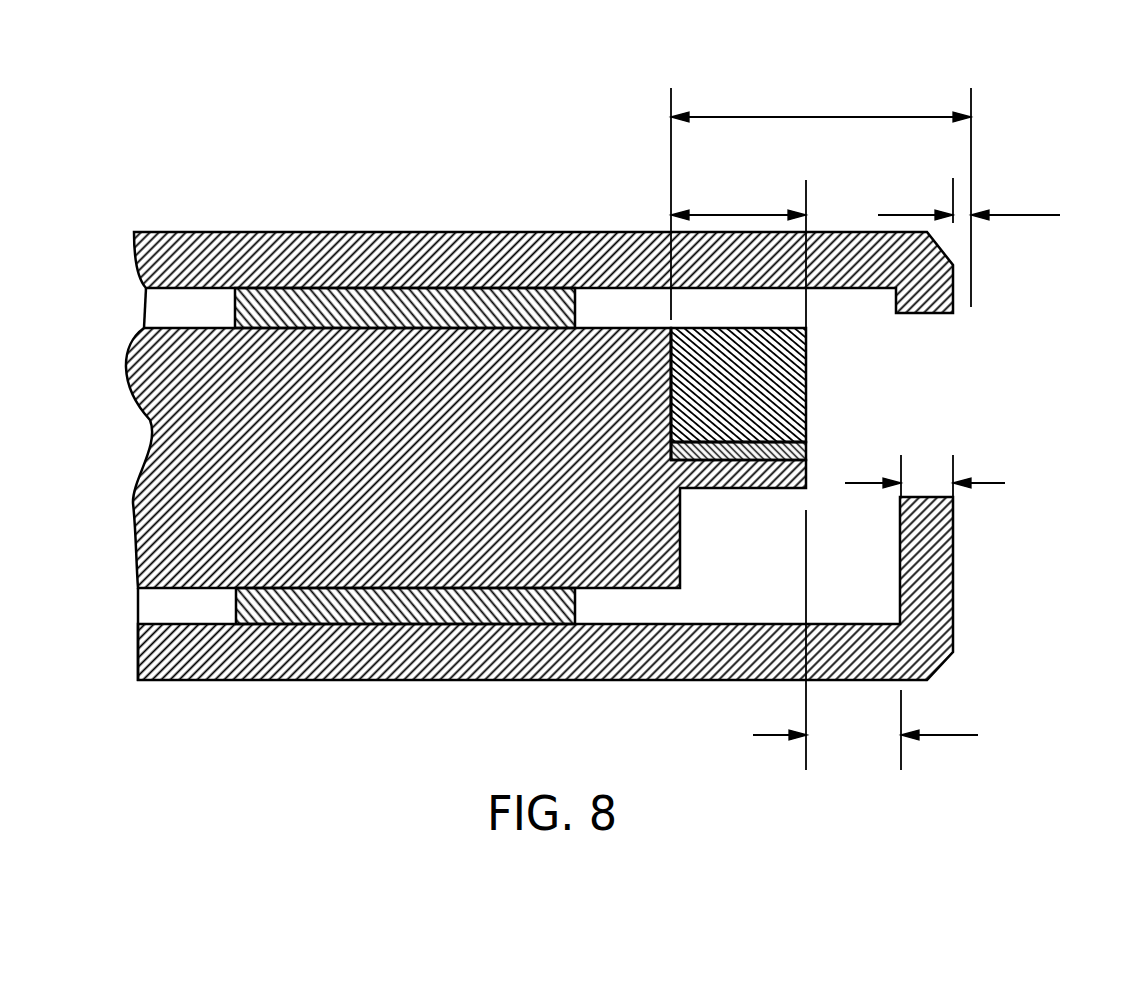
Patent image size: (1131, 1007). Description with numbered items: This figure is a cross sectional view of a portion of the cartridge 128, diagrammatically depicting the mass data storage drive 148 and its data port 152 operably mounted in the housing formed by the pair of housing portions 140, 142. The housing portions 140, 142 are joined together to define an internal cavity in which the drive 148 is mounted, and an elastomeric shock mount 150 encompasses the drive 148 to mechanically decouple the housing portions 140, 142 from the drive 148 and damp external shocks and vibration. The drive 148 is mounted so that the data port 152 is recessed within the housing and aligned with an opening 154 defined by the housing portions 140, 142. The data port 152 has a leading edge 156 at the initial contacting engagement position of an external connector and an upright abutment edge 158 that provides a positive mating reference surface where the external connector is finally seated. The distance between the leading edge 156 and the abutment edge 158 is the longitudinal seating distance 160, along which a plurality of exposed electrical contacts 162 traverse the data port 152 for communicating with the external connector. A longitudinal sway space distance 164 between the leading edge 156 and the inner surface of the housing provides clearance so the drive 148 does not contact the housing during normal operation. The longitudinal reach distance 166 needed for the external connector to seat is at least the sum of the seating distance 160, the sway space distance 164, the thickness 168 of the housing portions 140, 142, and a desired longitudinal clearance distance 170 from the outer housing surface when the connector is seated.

The cartridge 128 is at (323, 93).
The housing portion 140 is at (220, 232).
The housing portion 142 is at (225, 682).
The mass data storage drive 148 is at (440, 360).
The elastomeric shock mount 150 is at (317, 307).
The data port 152 is at (782, 380).
The opening 154 is at (985, 393).
The leading edge 156 is at (808, 457).
The upright abutment edge 158 is at (672, 383).
The longitudinal seating distance 160 is at (716, 208).
The electrical contacts 162 is at (727, 423).
The longitudinal sway space distance 164 is at (951, 750).
The longitudinal reach distance 166 is at (786, 108).
The thickness of the housing 168 is at (990, 492).
The longitudinal clearance distance 170 is at (1030, 208).